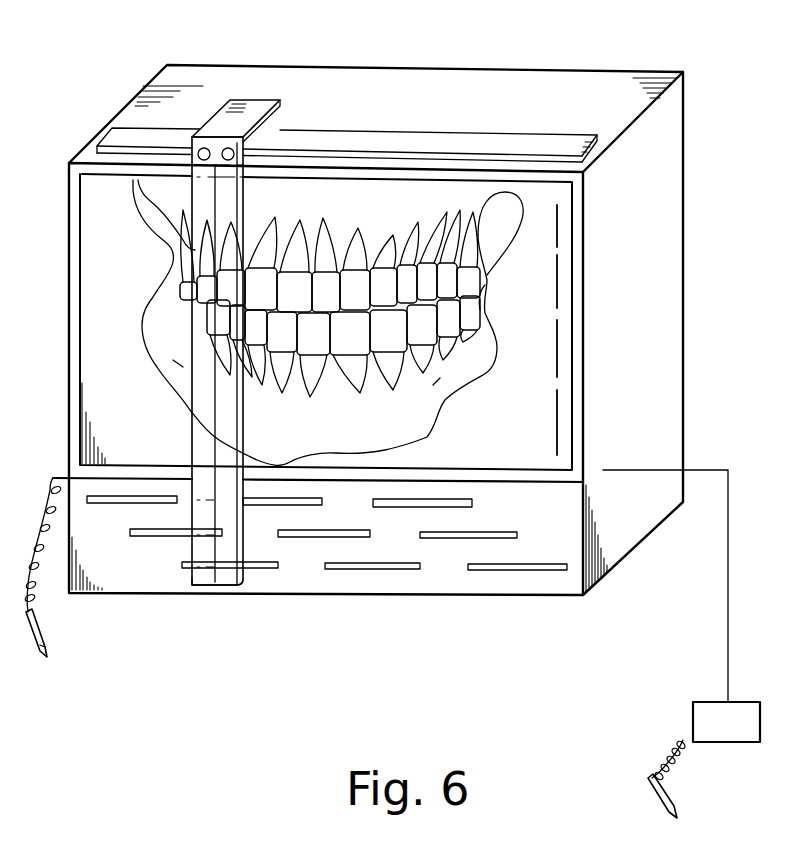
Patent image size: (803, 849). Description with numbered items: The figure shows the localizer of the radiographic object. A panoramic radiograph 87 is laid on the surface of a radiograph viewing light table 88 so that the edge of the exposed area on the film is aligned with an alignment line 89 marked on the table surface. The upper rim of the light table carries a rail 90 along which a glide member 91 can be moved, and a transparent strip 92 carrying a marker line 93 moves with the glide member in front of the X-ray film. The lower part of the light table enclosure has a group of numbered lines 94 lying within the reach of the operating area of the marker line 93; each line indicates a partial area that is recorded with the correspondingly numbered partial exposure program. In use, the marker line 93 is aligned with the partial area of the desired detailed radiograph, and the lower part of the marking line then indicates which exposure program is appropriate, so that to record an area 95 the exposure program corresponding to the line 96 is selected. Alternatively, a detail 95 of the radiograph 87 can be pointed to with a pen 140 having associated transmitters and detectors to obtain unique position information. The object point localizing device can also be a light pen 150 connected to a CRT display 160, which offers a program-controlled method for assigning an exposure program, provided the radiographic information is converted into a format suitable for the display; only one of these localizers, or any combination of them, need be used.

The panoramic radiograph 87 is at (485, 285).
The radiograph viewing light table 88 is at (348, 80).
The alignment line 89 is at (557, 323).
The rail 90 is at (385, 128).
The glide member 91 is at (245, 108).
The transparent strip 92 is at (200, 197).
The marker line 93 is at (160, 350).
The numbered lines 94 is at (455, 548).
The area 95 is at (195, 294).
The line 96 is at (230, 567).
The pen 140 is at (43, 628).
The light pen 150 is at (656, 790).
The CRT display 160 is at (693, 706).